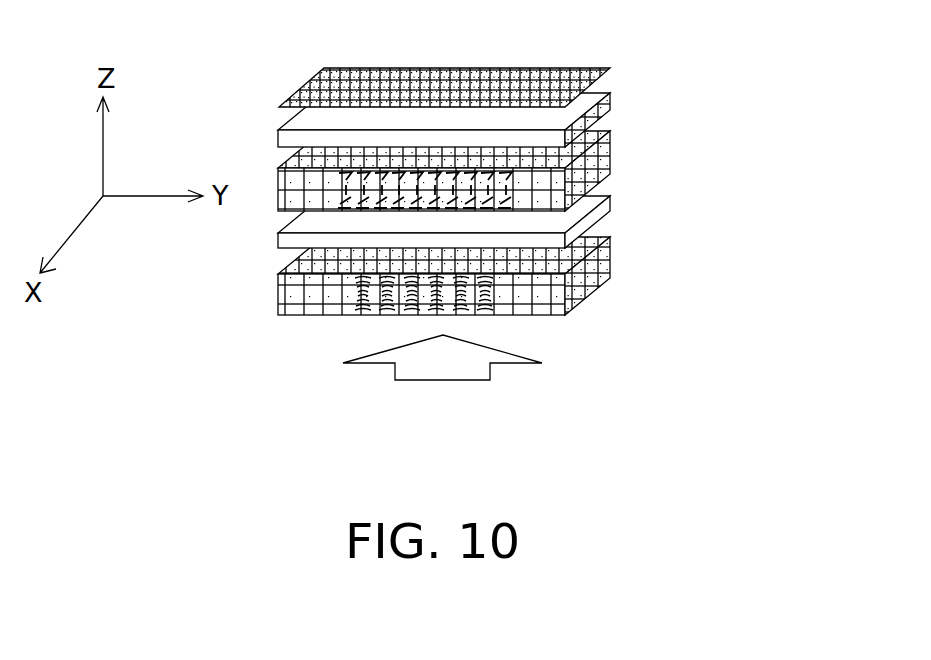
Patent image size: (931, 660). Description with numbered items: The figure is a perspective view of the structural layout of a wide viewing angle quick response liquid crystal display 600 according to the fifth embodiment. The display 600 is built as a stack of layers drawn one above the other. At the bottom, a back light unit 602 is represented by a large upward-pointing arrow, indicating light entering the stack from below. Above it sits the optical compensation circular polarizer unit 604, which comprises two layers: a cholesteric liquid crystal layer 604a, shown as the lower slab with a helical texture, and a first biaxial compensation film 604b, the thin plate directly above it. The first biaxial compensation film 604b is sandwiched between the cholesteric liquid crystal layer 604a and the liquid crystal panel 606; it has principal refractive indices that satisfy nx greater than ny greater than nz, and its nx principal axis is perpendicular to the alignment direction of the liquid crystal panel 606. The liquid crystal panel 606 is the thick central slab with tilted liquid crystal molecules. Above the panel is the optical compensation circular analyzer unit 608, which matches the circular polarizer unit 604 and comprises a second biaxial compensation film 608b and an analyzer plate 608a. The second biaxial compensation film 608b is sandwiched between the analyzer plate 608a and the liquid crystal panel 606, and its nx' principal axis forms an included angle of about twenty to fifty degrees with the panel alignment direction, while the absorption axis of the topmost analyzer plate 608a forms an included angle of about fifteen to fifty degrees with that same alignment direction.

The wide viewing angle quick response liquid crystal display 600 is at (561, 236).
The back light unit 602 is at (482, 370).
The optical compensation circular polarizer unit 604 is at (561, 255).
The cholesteric liquid crystal layer 604a is at (603, 262).
The first biaxial compensation film 604b is at (604, 208).
The liquid crystal panel 606 is at (598, 162).
The optical compensation circular analyzer unit 608 is at (561, 98).
The analyzer plate 608a is at (578, 75).
The second biaxial compensation film 608b is at (607, 103).